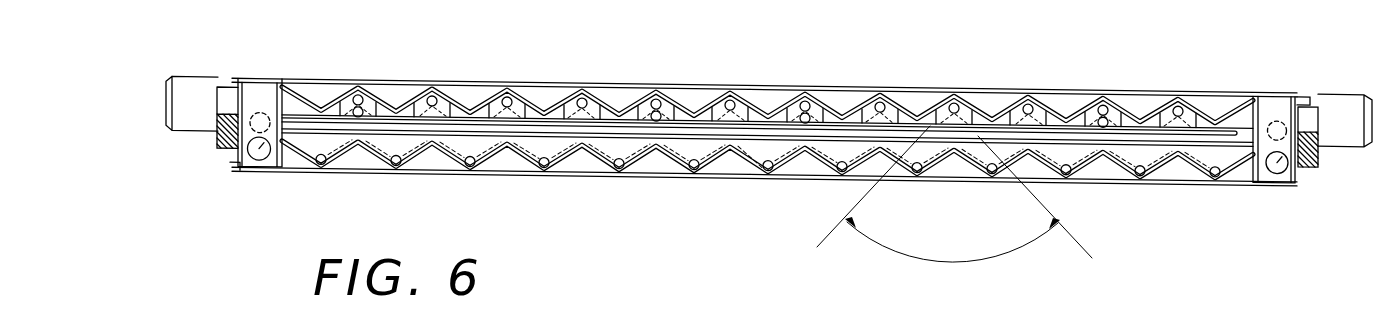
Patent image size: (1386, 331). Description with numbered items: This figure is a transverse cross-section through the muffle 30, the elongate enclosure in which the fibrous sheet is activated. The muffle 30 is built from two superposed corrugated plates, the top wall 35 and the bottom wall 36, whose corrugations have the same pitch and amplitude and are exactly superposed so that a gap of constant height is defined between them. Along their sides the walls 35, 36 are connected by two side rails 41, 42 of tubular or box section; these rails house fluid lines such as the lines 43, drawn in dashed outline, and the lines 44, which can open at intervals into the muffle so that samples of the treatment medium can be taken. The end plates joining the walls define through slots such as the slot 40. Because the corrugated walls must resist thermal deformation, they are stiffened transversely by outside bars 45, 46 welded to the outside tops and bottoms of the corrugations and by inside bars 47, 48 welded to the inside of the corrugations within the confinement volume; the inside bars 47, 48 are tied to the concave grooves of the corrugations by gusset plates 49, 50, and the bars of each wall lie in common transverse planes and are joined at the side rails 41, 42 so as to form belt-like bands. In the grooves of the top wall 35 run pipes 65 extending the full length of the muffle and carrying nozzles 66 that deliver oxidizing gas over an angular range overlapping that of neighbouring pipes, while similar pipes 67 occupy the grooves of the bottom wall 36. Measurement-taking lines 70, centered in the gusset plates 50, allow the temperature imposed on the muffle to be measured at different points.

The muffle 30 is at (709, 74).
The top wall 35 is at (563, 90).
The bottom wall 36 is at (642, 162).
The through slot 40 is at (593, 132).
The side rail 41 is at (261, 112).
The side rail 42 is at (1275, 110).
The fluid lines 43 is at (259, 153).
The fluid lines 44 is at (1305, 160).
The outside bar 45 is at (1145, 92).
The outside bar 46 is at (1172, 188).
The inside bar 47 is at (481, 128).
The inside bar 48 is at (468, 120).
The gusset plate 49 is at (342, 95).
The gusset plate 50 is at (394, 163).
The pipe 65 is at (360, 98).
The nozzle 66 is at (1002, 137).
The pipe 67 is at (768, 168).
The measurement-taking line 70 is at (361, 115).